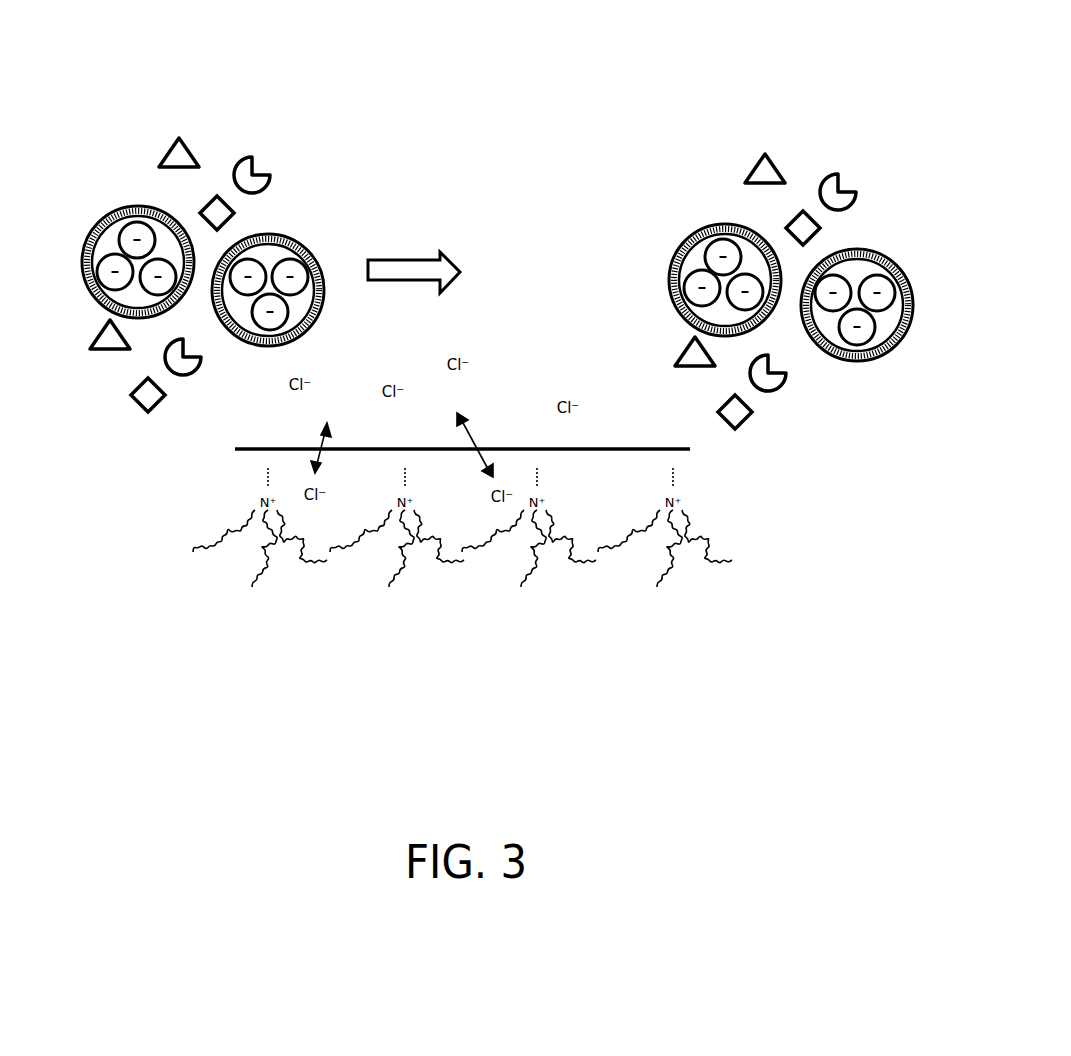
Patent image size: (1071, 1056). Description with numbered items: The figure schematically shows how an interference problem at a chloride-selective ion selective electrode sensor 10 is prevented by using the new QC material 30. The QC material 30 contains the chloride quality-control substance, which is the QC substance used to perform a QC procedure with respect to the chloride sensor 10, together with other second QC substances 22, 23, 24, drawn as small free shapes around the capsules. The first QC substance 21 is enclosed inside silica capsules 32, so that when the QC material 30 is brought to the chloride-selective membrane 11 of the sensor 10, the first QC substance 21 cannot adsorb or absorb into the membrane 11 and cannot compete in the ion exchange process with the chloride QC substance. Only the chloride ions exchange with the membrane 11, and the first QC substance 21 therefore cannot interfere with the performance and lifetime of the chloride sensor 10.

The ion selective electrode sensor 10 is at (626, 615).
The membrane 11 is at (520, 448).
The first QC substance 21 is at (265, 262).
The second QC substance 22 is at (133, 402).
The second QC substance 23 is at (267, 173).
The second QC substance 24 is at (193, 137).
The QC material 30 is at (128, 140).
The silica capsules 32 is at (318, 257).